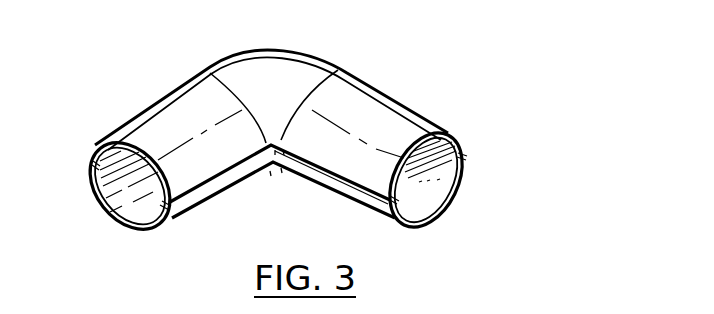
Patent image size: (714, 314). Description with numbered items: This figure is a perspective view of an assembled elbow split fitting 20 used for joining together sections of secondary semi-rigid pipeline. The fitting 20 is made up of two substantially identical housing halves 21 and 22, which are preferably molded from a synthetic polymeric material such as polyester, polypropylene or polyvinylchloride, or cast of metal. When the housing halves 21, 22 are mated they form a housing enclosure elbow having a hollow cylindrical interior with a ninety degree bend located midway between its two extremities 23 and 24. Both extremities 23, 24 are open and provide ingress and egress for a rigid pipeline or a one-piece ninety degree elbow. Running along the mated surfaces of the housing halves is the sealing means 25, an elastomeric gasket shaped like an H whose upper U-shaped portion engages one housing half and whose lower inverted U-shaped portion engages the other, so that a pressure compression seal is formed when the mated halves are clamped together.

The fitting 20 is at (372, 73).
The housing half 21 is at (423, 201).
The housing half 22 is at (207, 88).
The extremity 23 is at (111, 213).
The extremity 24 is at (461, 185).
The sealing means 25 is at (463, 160).